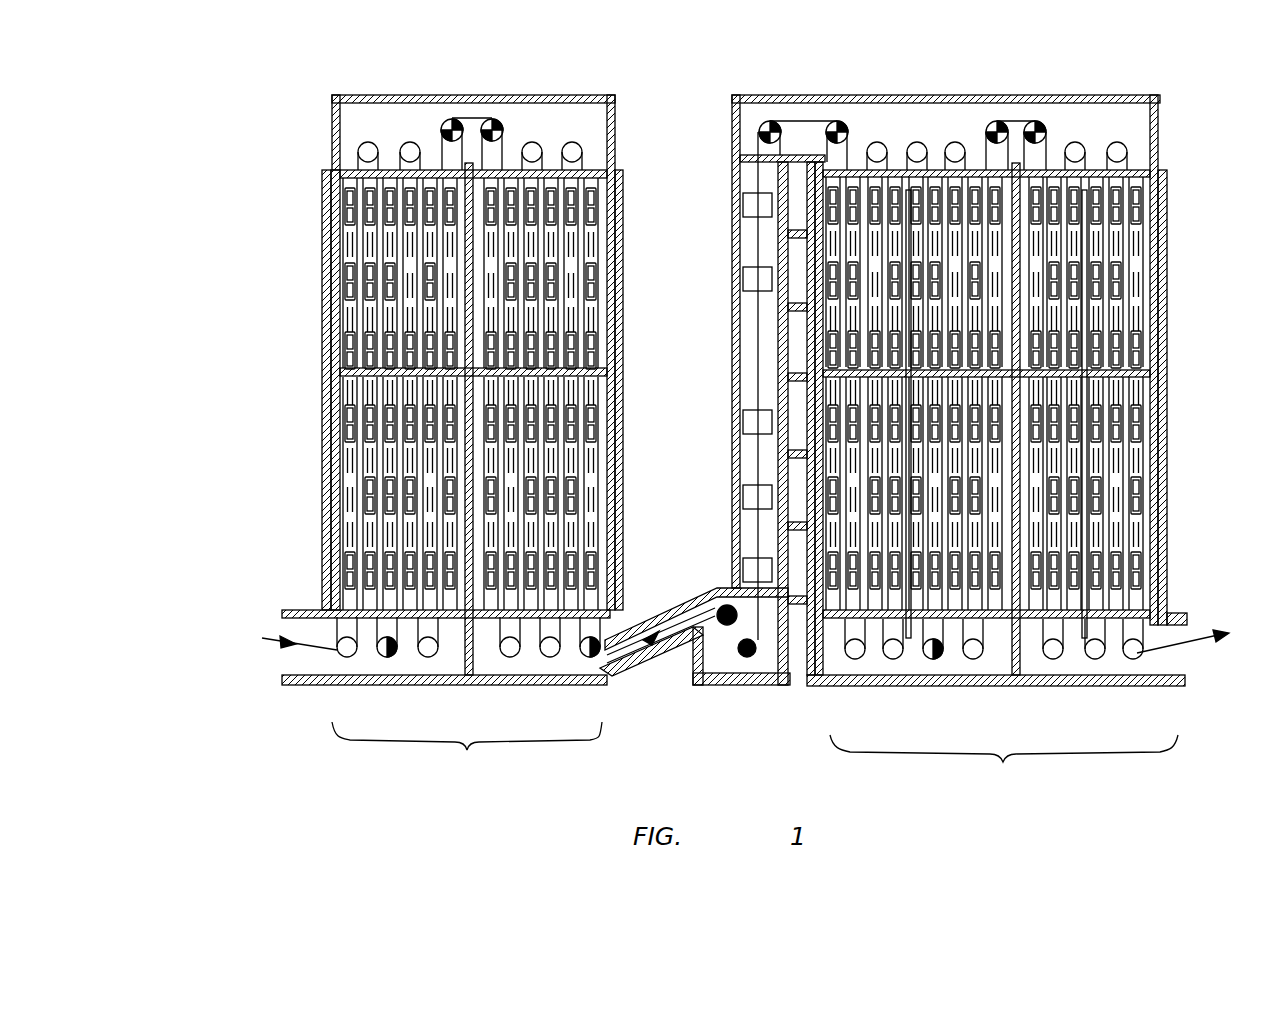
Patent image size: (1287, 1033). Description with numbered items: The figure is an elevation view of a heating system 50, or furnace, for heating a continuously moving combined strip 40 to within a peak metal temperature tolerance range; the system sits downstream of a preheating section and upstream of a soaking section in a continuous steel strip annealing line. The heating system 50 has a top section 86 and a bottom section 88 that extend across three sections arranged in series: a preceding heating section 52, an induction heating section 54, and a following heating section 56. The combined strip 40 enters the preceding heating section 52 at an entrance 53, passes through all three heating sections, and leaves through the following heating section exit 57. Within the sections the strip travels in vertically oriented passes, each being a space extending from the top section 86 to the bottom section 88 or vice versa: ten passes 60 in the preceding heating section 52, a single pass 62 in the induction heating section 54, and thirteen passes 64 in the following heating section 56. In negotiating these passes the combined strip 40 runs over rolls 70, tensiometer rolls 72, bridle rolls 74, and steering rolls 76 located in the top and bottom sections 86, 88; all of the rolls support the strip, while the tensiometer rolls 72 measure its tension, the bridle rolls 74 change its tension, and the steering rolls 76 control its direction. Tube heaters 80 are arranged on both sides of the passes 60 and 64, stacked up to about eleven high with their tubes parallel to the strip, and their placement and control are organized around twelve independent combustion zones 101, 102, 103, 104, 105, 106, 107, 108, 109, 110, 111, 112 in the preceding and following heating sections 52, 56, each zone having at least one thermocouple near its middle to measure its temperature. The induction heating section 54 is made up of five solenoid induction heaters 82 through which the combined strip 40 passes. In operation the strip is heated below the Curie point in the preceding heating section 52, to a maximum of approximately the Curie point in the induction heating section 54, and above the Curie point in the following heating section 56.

The combined strip 40 is at (265, 640).
The heating system 50 is at (1150, 52).
The preceding heating section 52 is at (370, 78).
The entrance 53 is at (282, 610).
The induction heating section 54 is at (765, 88).
The following heating section 56 is at (993, 82).
The following heating section exit 57 is at (1167, 613).
The passes 60 is at (467, 756).
The pass 62 is at (762, 665).
The passes 64 is at (1004, 767).
The rolls 70 is at (534, 142).
The tensiometer rolls 72 is at (390, 658).
The bridle rolls 74 is at (745, 657).
The steering rolls 76 is at (452, 118).
The tube heaters 80 is at (362, 273).
The induction heaters 82 is at (740, 203).
The top section 86 is at (310, 98).
The bottom section 88 is at (228, 617).
The combustion zone 101 is at (350, 507).
The combustion zone 102 is at (348, 308).
The combustion zone 103 is at (587, 498).
The combustion zone 104 is at (597, 300).
The combustion zone 105 is at (855, 588).
The combustion zone 106 is at (855, 180).
The combustion zone 107 is at (945, 628).
The combustion zone 108 is at (930, 185).
The combustion zone 109 is at (1032, 600).
The combustion zone 110 is at (1048, 212).
The combustion zone 111 is at (1137, 518).
The combustion zone 112 is at (1143, 300).